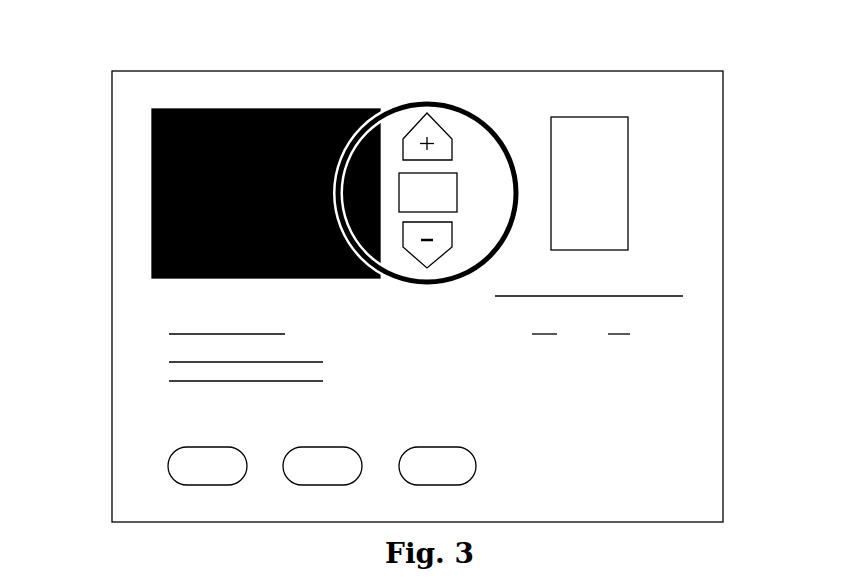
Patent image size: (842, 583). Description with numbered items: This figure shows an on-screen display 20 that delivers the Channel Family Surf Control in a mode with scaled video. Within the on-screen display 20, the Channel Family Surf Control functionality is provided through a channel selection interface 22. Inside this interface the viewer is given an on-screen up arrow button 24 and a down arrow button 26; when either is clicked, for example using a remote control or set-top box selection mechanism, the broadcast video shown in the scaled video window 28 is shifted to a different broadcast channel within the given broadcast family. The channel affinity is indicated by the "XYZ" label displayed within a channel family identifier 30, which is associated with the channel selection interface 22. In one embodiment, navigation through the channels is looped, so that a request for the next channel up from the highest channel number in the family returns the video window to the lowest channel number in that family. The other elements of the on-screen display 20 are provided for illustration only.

The on-screen display 20 is at (440, 296).
The channel selection interface 22 is at (483, 123).
The up arrow button 24 is at (410, 135).
The down arrow button 26 is at (452, 233).
The scaled video window 28 is at (180, 171).
The channel family identifier 30 is at (453, 185).